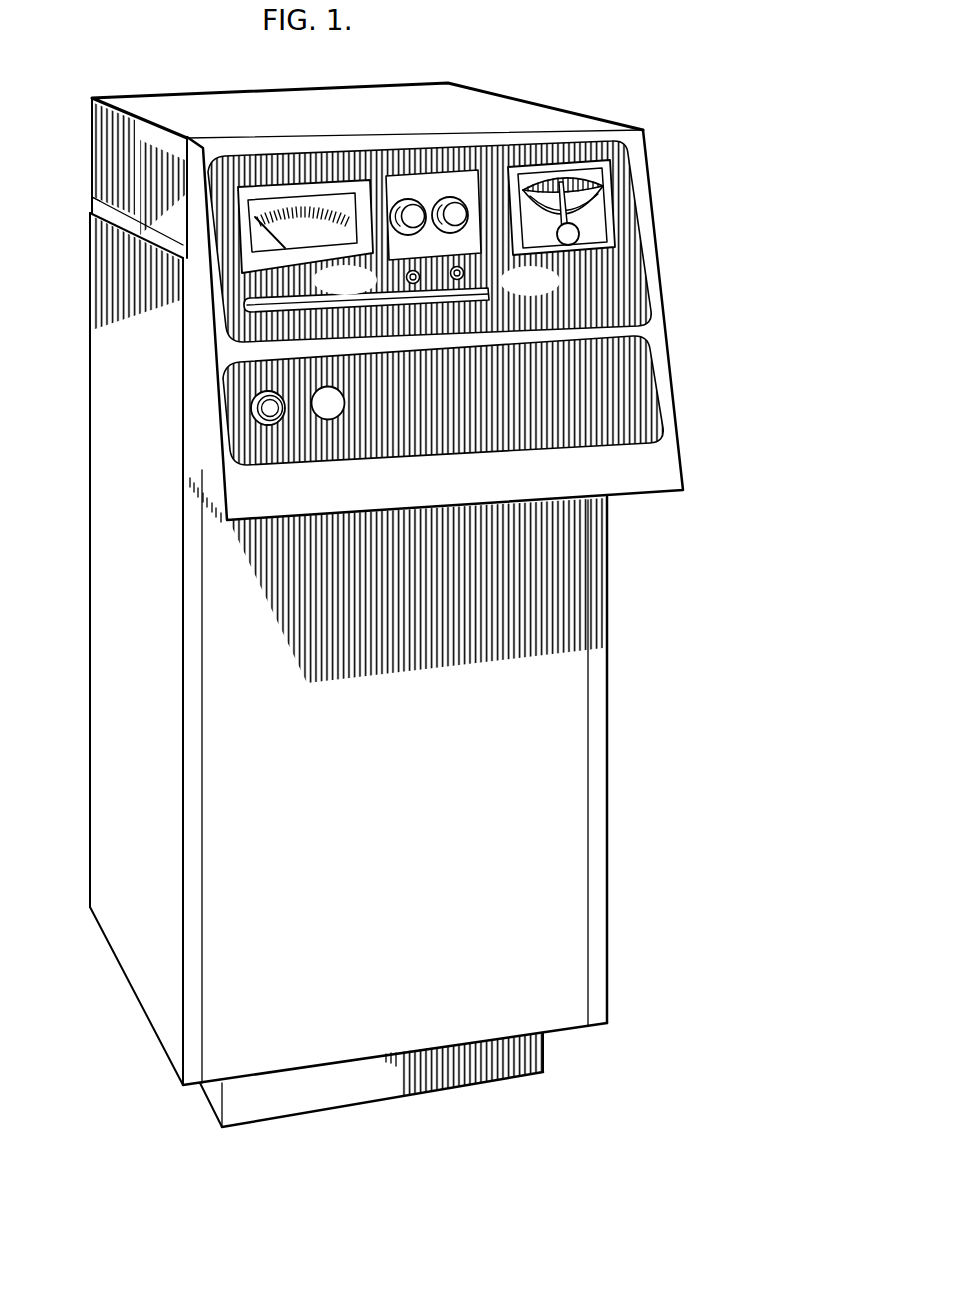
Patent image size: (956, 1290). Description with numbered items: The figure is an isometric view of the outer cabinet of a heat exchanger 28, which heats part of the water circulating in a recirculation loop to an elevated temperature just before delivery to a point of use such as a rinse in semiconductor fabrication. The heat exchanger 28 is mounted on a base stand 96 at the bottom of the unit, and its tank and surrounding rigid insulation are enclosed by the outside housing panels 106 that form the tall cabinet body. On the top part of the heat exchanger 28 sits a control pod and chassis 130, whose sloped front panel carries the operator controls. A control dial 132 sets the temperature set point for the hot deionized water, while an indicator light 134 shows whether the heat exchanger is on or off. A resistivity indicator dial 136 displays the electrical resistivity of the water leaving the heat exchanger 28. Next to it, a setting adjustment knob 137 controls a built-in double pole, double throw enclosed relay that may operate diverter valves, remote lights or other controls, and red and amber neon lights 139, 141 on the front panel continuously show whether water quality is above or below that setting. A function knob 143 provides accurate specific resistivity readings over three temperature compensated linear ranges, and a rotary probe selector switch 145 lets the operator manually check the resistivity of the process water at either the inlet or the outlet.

The heat exchanger 28 is at (88, 498).
The base stand 96 is at (543, 1059).
The outside housing panels 106 is at (103, 650).
The control pod and chassis 130 is at (623, 157).
The control dial 132 is at (576, 233).
The indicator light 134 is at (257, 410).
The resistivity indicator dial 136 is at (280, 202).
The setting adjustment knob 137 is at (458, 214).
The red neon light 139 is at (406, 278).
The amber neon light 141 is at (465, 273).
The function knob 143 is at (412, 216).
The rotary probe selector switch 145 is at (336, 414).